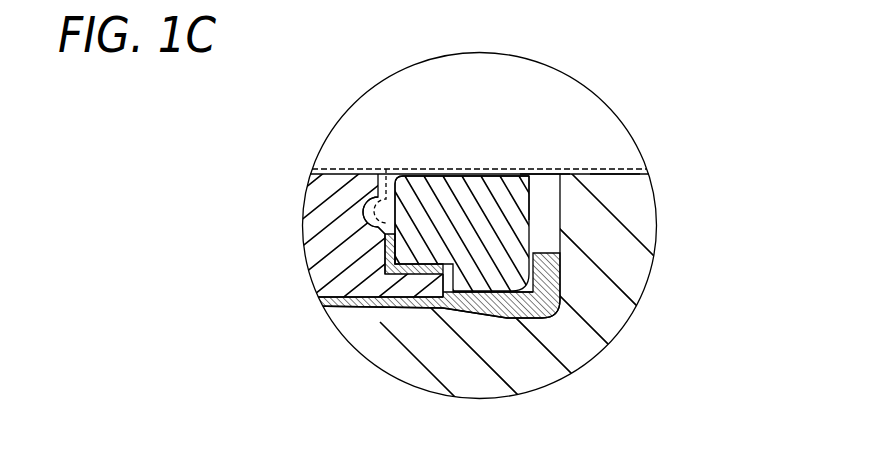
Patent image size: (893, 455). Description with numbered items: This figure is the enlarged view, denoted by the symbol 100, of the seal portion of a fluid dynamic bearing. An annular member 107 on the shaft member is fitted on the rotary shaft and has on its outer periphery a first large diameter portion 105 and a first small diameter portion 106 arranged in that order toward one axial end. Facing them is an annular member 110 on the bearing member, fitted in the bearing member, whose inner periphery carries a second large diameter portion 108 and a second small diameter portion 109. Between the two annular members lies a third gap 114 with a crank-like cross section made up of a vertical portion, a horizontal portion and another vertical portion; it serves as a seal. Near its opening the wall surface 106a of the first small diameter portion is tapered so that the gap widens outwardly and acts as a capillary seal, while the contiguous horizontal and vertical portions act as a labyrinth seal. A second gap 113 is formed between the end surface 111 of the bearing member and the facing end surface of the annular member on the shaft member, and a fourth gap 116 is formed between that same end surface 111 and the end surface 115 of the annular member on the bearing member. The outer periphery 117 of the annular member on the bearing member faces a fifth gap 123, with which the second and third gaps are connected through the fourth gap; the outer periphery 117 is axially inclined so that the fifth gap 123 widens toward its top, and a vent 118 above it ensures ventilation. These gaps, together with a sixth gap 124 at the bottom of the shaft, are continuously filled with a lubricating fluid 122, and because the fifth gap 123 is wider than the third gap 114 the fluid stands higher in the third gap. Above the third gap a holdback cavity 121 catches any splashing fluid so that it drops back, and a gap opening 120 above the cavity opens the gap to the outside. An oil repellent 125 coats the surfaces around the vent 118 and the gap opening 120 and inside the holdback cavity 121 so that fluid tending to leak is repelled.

The enlarged view symbol 100 is at (658, 156).
The first large diameter portion 105 is at (400, 292).
The first small diameter portion 106 is at (366, 222).
The wall surface of the first small diameter portion 106a is at (383, 264).
The annular member on the shaft member 107 is at (315, 254).
The second large diameter portion 108 is at (448, 248).
The second small diameter portion 109 is at (415, 218).
The annular member on the bearing member 110 is at (470, 192).
The end surface of the bearing member 111 is at (520, 331).
The second gap 113 is at (340, 304).
The third gap 114 is at (383, 295).
The end surface of the annular member on the bearing member 115 is at (499, 276).
The fourth gap 116 is at (503, 318).
The outer periphery 117 is at (538, 193).
The vent 118 is at (550, 160).
The gap opening 120 is at (389, 163).
The holdback cavity 121 is at (312, 172).
The lubricating fluid 122 is at (570, 267).
The fifth gap 123 is at (540, 220).
The sixth gap 124 is at (428, 4).
The oil repellent 125 is at (618, 164).